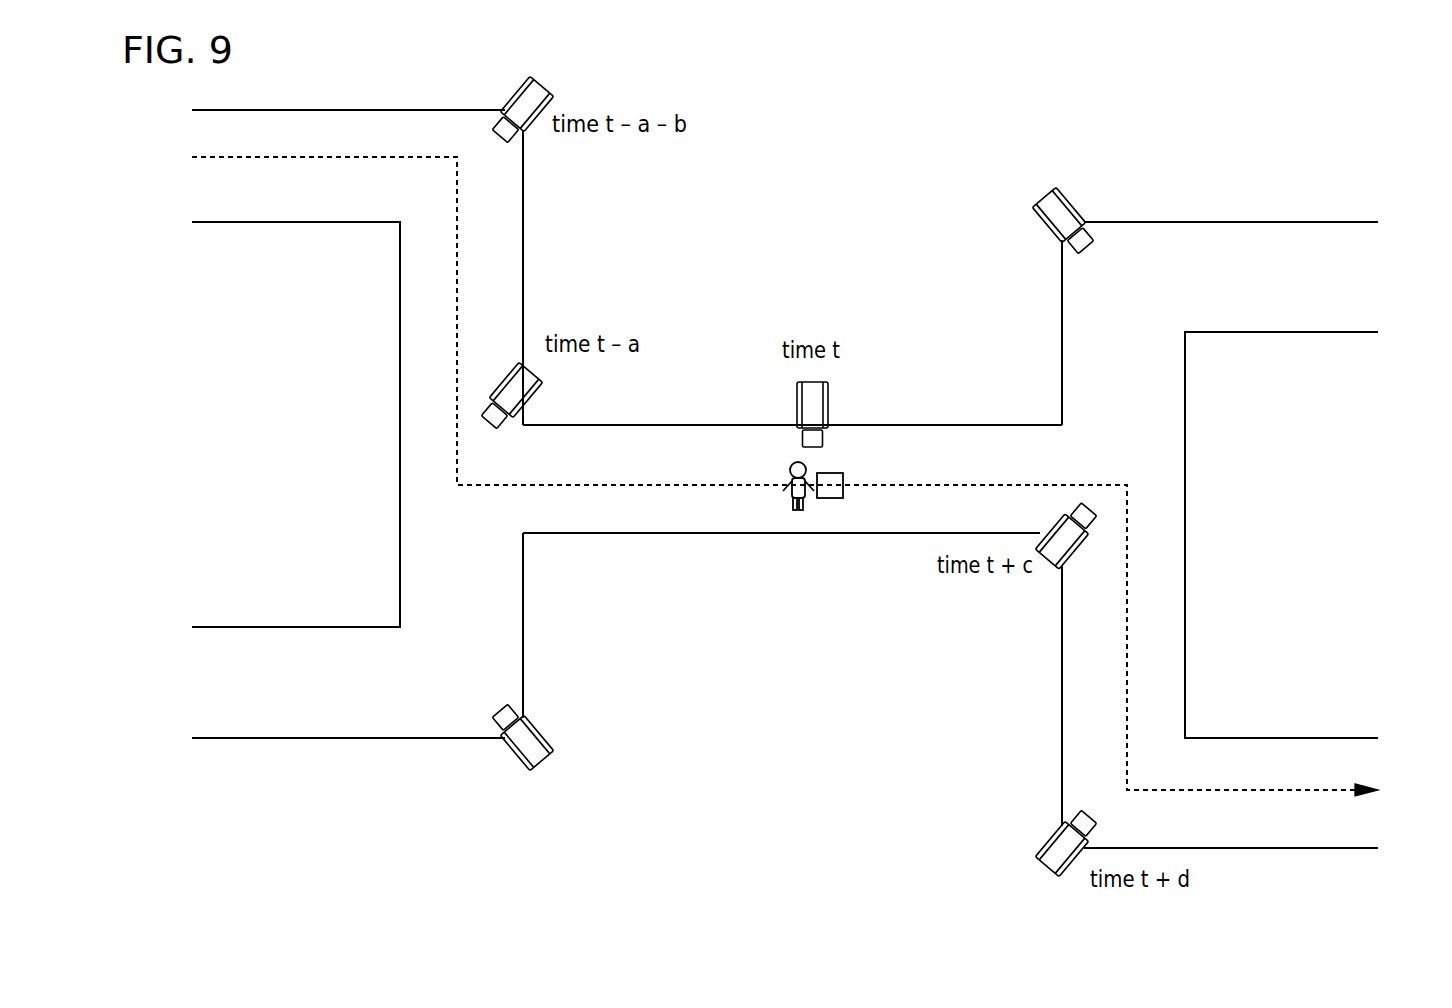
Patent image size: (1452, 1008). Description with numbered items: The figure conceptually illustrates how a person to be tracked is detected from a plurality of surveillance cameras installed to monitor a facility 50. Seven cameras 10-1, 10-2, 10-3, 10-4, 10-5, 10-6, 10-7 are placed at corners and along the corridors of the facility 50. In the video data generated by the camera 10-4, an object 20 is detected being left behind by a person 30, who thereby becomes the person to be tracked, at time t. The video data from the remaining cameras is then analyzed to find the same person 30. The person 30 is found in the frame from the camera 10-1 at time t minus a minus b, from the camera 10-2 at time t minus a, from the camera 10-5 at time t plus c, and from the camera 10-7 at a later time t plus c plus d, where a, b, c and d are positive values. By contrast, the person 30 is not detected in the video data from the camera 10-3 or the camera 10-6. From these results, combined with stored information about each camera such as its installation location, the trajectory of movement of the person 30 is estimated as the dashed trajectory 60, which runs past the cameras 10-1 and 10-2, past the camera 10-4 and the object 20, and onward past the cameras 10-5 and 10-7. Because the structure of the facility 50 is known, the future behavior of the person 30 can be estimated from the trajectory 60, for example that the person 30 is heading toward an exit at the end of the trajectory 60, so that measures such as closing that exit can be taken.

The camera 10-1 is at (545, 85).
The camera 10-2 is at (537, 390).
The camera 10-3 is at (538, 726).
The camera 10-4 is at (830, 390).
The camera 10-5 is at (1048, 567).
The camera 10-6 is at (1070, 197).
The camera 10-7 is at (1057, 840).
The object 20 is at (828, 498).
The person 30 is at (798, 510).
The facility 50 is at (1326, 128).
The trajectory 60 is at (677, 487).